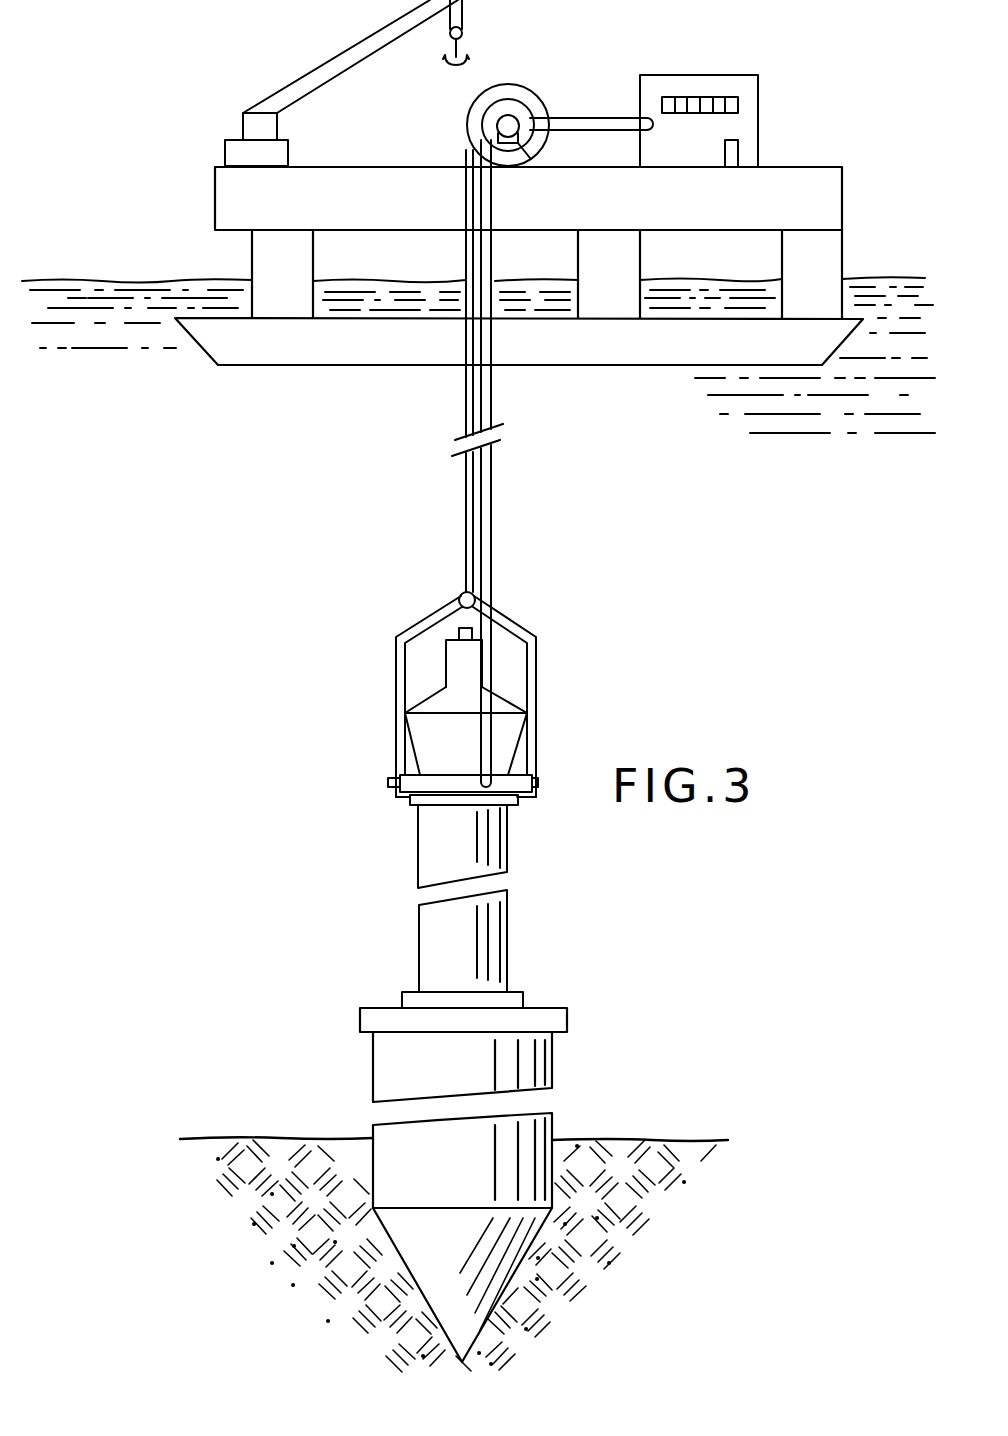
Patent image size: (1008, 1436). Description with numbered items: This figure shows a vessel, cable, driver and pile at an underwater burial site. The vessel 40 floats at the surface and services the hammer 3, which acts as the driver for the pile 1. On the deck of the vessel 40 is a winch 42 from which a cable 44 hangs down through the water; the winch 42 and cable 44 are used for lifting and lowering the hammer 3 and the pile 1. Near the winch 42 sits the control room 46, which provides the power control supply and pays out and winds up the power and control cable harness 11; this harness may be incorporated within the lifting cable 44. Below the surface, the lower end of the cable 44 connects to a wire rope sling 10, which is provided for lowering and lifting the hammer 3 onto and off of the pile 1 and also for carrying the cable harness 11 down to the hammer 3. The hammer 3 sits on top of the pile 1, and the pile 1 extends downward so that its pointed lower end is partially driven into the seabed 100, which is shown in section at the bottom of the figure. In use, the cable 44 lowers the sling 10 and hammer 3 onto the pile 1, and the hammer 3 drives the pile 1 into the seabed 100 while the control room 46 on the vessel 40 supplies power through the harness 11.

The pile 1 is at (553, 1073).
The hammer 3 is at (508, 912).
The wire rope sling 10 is at (537, 702).
The power and control cable harness 11 is at (493, 527).
The vessel 40 is at (360, 364).
The winch 42 is at (466, 117).
The cable 44 is at (463, 527).
The control room 46 is at (760, 146).
The seabed 100 is at (243, 1216).